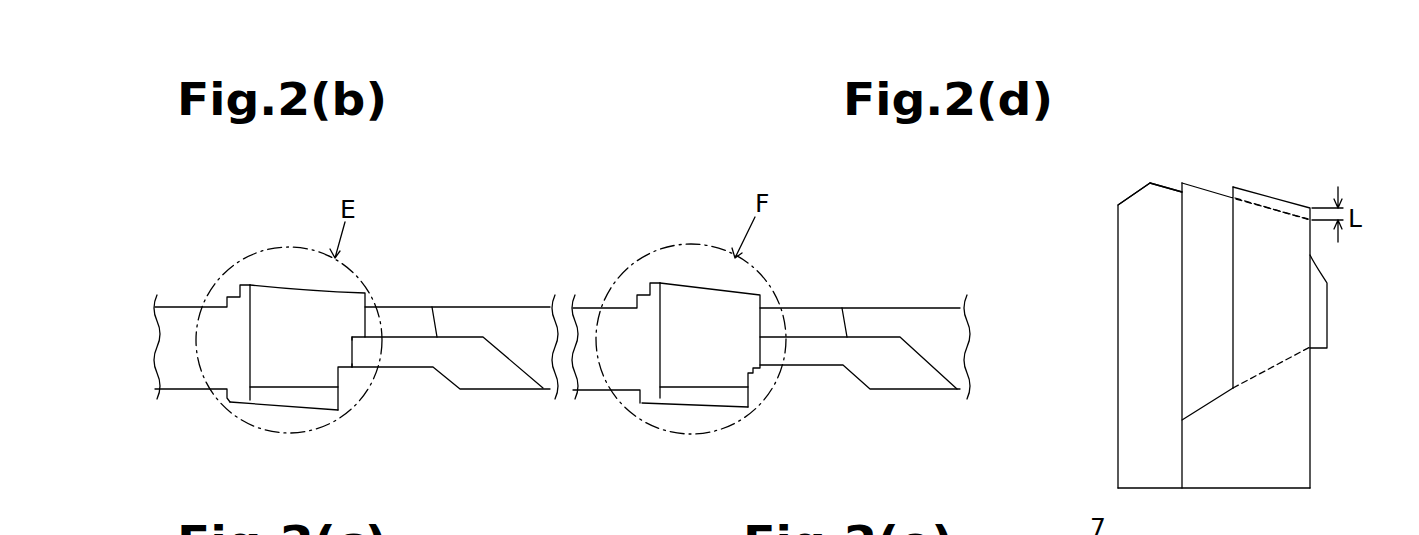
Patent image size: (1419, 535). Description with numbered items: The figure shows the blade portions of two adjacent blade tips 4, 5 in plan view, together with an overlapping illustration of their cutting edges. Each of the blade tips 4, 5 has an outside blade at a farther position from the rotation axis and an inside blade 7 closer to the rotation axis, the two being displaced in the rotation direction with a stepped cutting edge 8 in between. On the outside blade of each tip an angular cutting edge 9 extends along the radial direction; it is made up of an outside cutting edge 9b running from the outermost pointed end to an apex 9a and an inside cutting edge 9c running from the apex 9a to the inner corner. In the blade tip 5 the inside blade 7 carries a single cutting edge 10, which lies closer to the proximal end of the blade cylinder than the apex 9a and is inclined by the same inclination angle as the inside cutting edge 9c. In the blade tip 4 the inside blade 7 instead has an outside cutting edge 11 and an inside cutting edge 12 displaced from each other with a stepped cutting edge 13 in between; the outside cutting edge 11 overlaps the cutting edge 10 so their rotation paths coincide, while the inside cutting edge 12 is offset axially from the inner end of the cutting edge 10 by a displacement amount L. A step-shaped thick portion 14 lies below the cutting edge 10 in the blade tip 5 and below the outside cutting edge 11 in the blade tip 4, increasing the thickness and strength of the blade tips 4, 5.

In FIG. 2B, the blade tip 4 is at (292, 306).
In FIG. 2D, the blade tip 4 is at (1160, 282).
In FIG. 2B, the blade tip 5 is at (708, 305).
In FIG. 2B, the inside blade 7 is at (451, 311).
In FIG. 2D, the inside blade 7 is at (1246, 295).
In FIG. 2B, the stepped cutting edge 8 is at (347, 362).
In FIG. 2B, the cutting edge 9 is at (340, 382).
In FIG. 2D, the cutting edge 9 is at (1139, 278).
In FIG. 2D, the apex 9a is at (1152, 183).
In FIG. 2D, the outside cutting edge 9b is at (1137, 193).
In FIG. 2D, the inside cutting edge 9c is at (1164, 186).
In FIG. 2B, the cutting edge 10 is at (767, 320).
In FIG. 2D, the cutting edge 10 is at (1270, 210).
In FIG. 2B, the outside cutting edge 11 is at (353, 357).
In FIG. 2D, the outside cutting edge 11 is at (1213, 188).
In FIG. 2B, the inside cutting edge 12 is at (367, 320).
In FIG. 2D, the inside cutting edge 12 is at (1277, 198).
In FIG. 2B, the stepped cutting edge 13 is at (362, 330).
In FIG. 2D, the thick portion 14 is at (1208, 403).